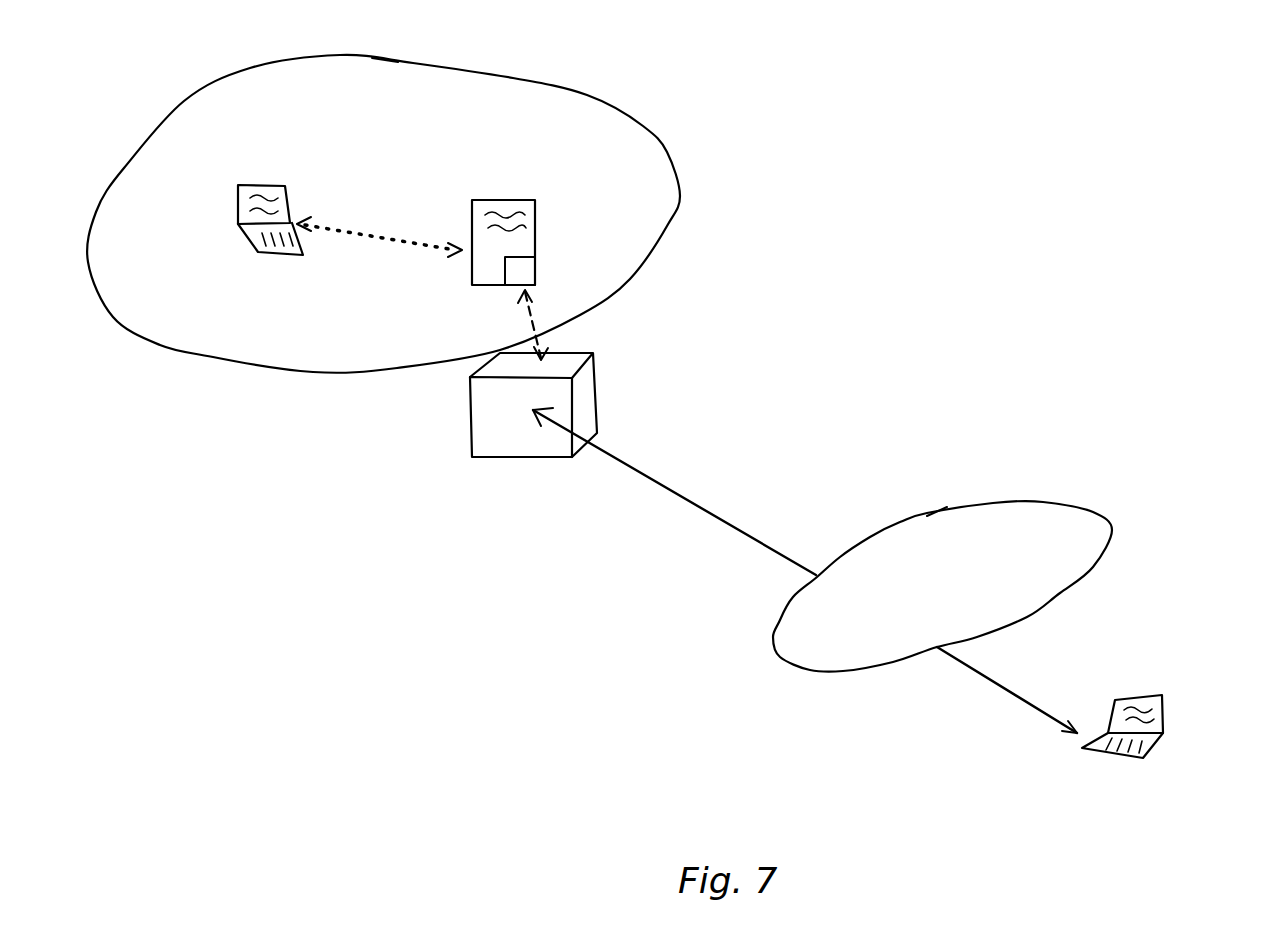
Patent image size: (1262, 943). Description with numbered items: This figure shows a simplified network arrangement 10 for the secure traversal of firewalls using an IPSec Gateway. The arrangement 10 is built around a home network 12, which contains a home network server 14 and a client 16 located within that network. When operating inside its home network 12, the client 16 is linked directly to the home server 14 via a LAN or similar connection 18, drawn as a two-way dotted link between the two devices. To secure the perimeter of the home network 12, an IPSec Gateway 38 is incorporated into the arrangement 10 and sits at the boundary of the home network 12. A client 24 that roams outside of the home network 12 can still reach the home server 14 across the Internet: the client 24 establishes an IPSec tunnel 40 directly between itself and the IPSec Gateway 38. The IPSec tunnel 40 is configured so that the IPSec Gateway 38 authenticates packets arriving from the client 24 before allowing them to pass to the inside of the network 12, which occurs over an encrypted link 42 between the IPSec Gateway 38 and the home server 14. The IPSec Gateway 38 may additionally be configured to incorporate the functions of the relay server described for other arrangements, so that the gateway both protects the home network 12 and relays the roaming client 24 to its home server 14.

The network arrangement 10 is at (974, 177).
The home network 12 is at (587, 97).
The home network server 14 is at (515, 200).
The client 16 is at (252, 185).
The LAN or similar connection 18 is at (350, 223).
The client 24 is at (1165, 712).
The IPSec Gateway 38 is at (500, 458).
The IPSec tunnel 40 is at (675, 490).
The encrypted link 42 is at (543, 307).